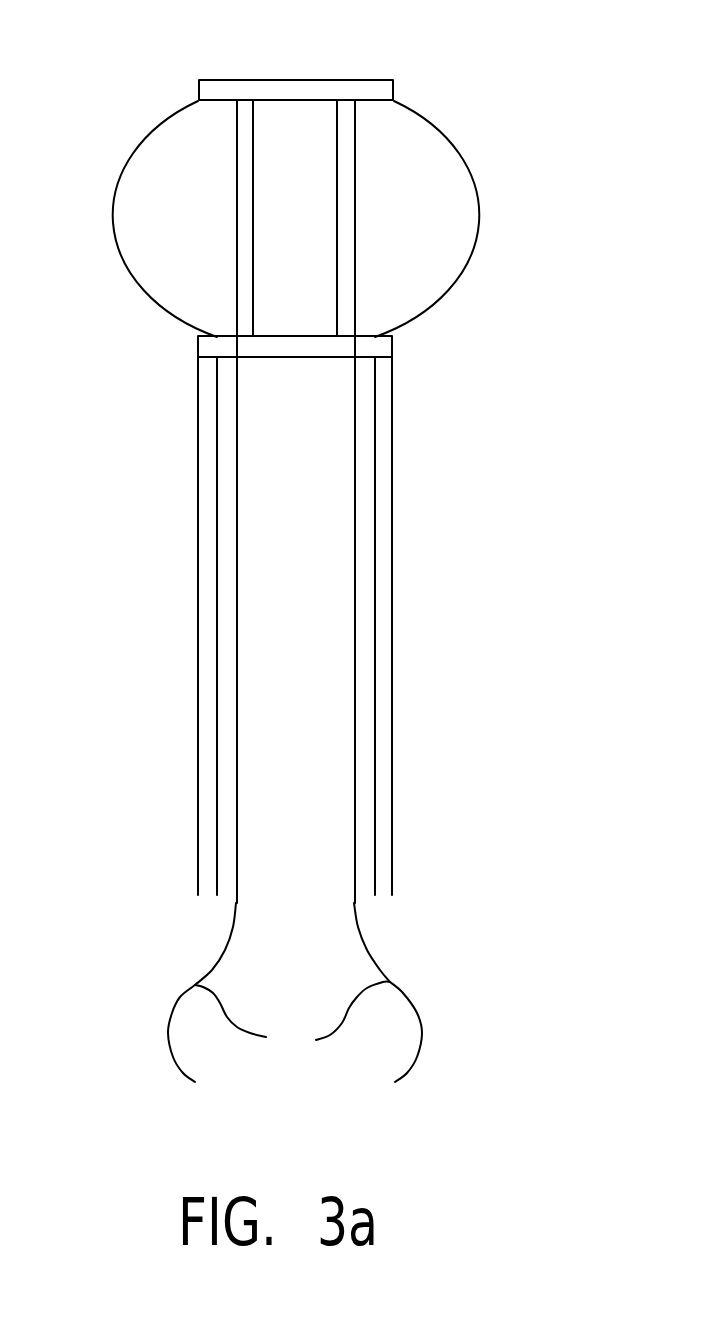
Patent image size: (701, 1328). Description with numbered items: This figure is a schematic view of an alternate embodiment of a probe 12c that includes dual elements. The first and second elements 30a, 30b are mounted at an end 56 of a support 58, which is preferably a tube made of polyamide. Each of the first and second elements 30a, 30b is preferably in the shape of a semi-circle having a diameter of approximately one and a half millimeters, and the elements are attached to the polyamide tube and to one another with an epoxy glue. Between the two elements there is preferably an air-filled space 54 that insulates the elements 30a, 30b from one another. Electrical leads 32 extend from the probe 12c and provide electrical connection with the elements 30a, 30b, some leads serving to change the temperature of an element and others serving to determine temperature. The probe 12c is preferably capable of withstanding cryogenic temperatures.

The probe 12c is at (460, 69).
The first element 30a is at (135, 155).
The second element 30b is at (448, 140).
The electrical leads 32 is at (322, 1038).
The air-filled space 54 is at (302, 115).
The end 56 is at (393, 350).
The support 58 is at (393, 443).